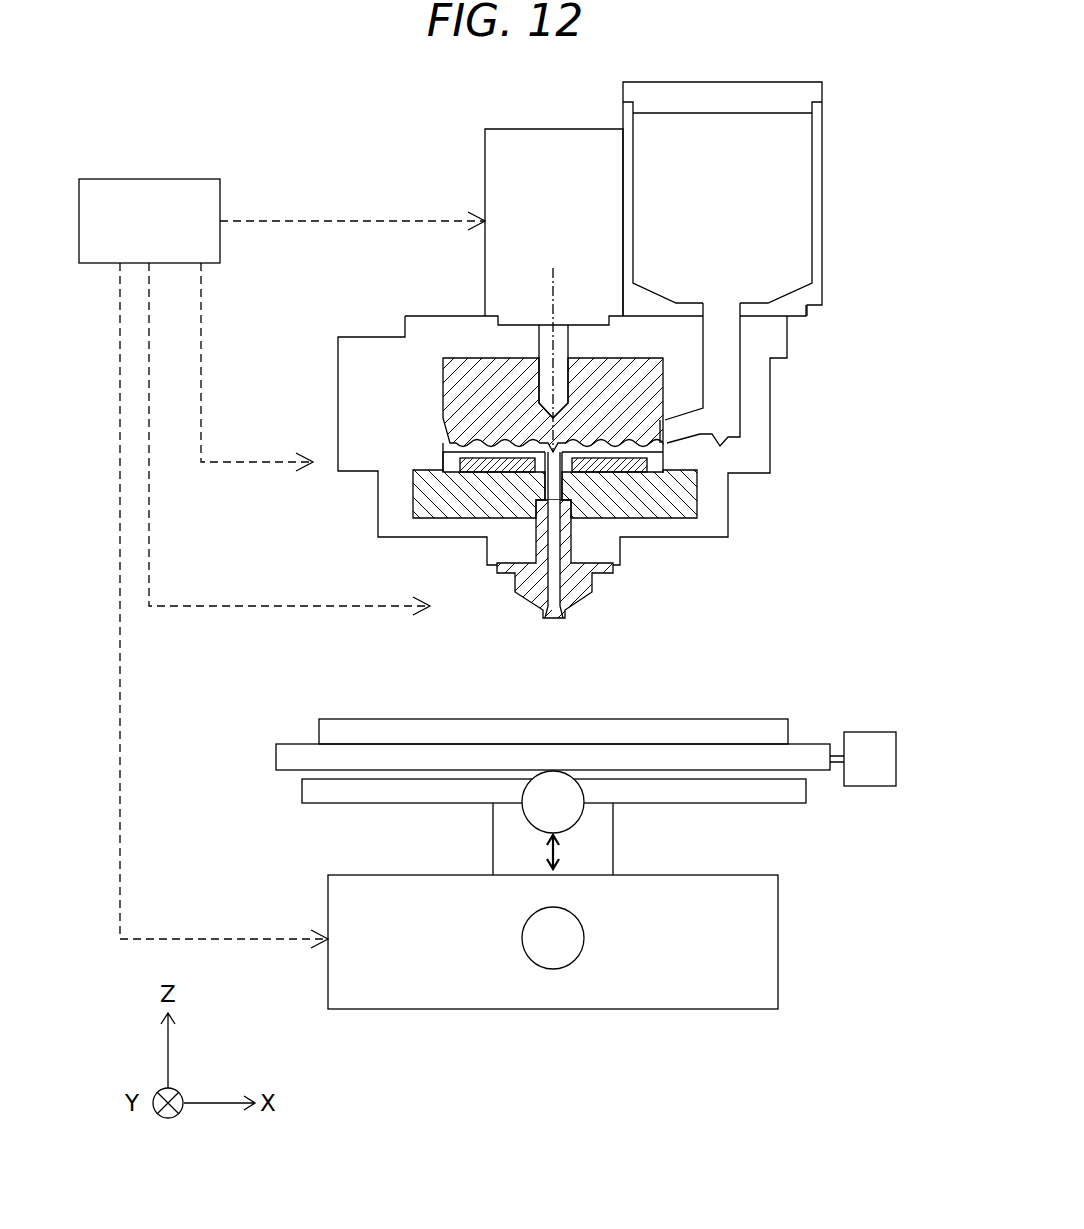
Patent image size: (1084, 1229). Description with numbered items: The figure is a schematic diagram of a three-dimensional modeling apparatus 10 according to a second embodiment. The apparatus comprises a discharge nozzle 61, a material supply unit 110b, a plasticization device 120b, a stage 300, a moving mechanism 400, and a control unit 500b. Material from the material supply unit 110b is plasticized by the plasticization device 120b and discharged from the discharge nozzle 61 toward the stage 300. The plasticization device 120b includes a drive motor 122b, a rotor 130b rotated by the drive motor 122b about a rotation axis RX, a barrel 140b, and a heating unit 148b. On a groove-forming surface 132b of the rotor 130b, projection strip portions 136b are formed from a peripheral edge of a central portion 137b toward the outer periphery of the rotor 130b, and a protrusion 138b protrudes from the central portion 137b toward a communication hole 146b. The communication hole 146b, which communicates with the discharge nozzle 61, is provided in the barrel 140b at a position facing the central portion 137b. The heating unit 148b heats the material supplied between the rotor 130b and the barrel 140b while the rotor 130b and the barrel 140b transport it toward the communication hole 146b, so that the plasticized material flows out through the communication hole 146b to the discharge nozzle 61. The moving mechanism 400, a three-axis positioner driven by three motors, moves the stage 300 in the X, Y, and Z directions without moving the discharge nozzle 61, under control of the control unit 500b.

The three-dimensional modeling apparatus 10 is at (354, 108).
The control unit 500b is at (145, 179).
The plasticization device 120b is at (399, 203).
The drive motor 122b is at (485, 158).
The rotation axis RX is at (553, 292).
The material supply unit 110b is at (822, 196).
The rotor 130b is at (663, 358).
The central portion 137b is at (540, 440).
The projection strip portions 136b is at (490, 440).
The protrusion 138b is at (665, 420).
The heating unit 148b is at (655, 490).
The barrel 140b is at (452, 498).
The groove-forming surface 132b is at (452, 453).
The communication hole 146b is at (678, 520).
The discharge nozzle 61 is at (568, 609).
The stage 300 is at (815, 714).
The moving mechanism 400 is at (826, 852).